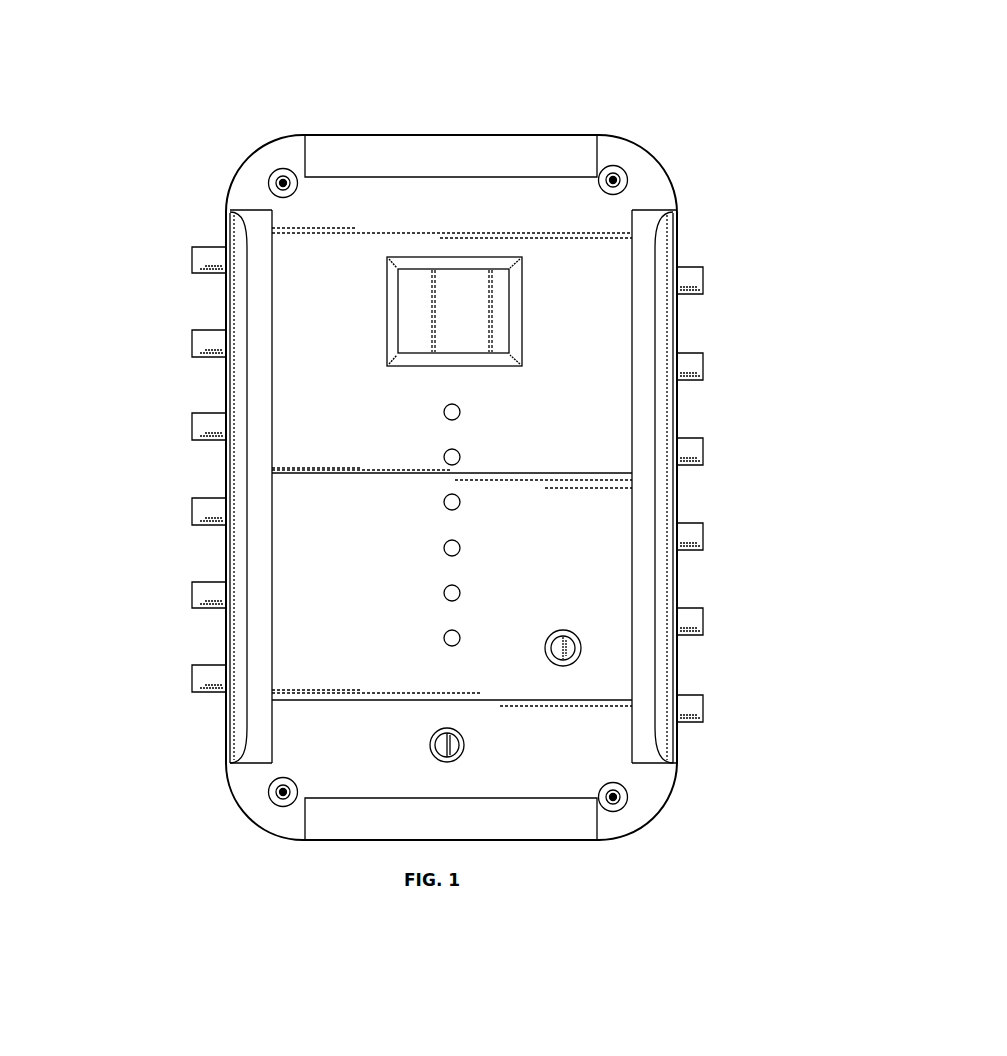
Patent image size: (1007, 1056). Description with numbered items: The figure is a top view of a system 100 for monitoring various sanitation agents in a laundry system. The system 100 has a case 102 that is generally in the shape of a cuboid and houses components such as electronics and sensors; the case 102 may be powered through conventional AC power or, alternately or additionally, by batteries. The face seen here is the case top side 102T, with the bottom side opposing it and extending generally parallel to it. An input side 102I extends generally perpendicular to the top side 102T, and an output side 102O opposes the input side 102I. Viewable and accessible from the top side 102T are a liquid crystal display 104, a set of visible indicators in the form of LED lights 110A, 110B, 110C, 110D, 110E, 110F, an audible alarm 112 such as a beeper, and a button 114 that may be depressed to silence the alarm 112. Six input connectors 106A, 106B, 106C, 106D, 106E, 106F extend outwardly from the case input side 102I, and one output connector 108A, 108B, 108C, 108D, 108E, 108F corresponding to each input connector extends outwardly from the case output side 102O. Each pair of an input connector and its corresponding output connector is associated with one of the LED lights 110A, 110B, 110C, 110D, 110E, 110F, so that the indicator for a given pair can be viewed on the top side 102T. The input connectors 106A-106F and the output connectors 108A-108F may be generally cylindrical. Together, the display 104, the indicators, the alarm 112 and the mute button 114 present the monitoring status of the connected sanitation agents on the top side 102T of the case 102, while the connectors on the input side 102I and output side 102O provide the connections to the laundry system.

The system 100 is at (607, 86).
The case 102 is at (658, 176).
The top side 102T is at (296, 247).
The input side 102I is at (806, 429).
The output side 102O is at (73, 469).
The display 104 is at (450, 252).
The input connector 106A is at (681, 268).
The input connector 106B is at (681, 354).
The input connector 106C is at (688, 437).
The input connector 106D is at (688, 522).
The input connector 106E is at (688, 607).
The input connector 106F is at (688, 694).
The output connector 108A is at (192, 273).
The output connector 108B is at (192, 357).
The output connector 108C is at (192, 440).
The output connector 108D is at (198, 525).
The output connector 108E is at (198, 608).
The output connector 108F is at (198, 692).
The LED light 110A is at (443, 415).
The LED light 110B is at (443, 460).
The LED light 110C is at (443, 505).
The LED light 110D is at (460, 547).
The LED light 110E is at (460, 593).
The LED light 110F is at (460, 640).
The audible alarm 112 is at (428, 760).
The button 114 is at (553, 674).